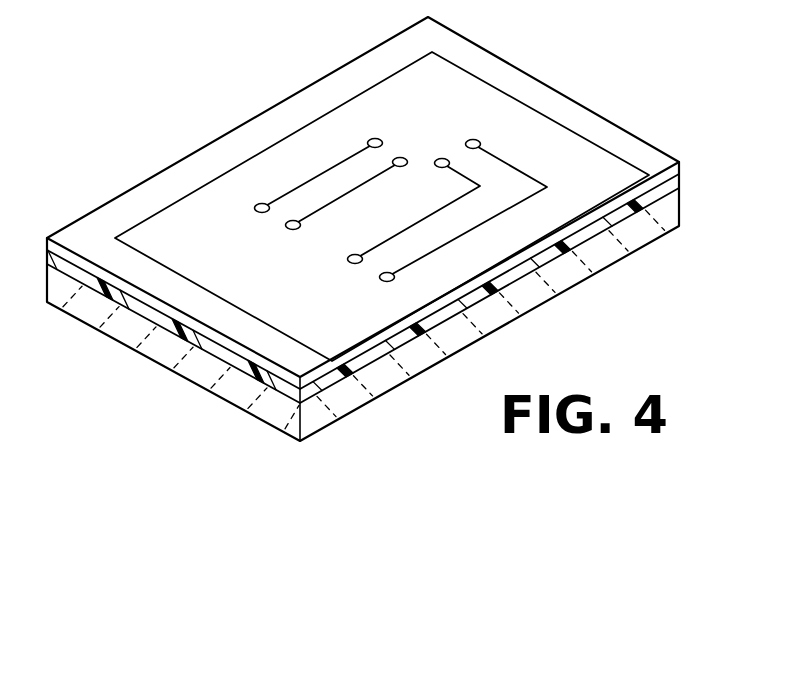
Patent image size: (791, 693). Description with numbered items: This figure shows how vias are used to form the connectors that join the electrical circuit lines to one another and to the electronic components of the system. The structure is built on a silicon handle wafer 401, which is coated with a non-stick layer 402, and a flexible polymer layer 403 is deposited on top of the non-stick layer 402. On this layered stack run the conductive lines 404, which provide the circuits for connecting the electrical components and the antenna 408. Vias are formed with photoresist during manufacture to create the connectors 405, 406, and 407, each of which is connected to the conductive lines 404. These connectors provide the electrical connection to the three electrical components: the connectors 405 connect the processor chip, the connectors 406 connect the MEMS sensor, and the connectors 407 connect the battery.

The silicon handle wafer 401 is at (653, 244).
The non-stick layer 402 is at (680, 178).
The flexible polymer layer 403 is at (680, 162).
The conductive lines 404 is at (437, 247).
The connectors 405 is at (471, 140).
The connectors 406 is at (291, 229).
The connectors 407 is at (387, 282).
The antenna 408 is at (494, 86).